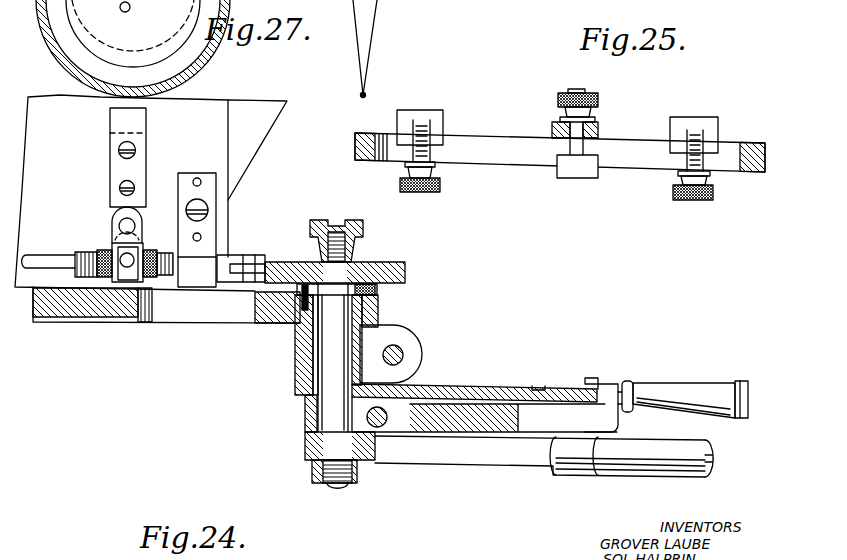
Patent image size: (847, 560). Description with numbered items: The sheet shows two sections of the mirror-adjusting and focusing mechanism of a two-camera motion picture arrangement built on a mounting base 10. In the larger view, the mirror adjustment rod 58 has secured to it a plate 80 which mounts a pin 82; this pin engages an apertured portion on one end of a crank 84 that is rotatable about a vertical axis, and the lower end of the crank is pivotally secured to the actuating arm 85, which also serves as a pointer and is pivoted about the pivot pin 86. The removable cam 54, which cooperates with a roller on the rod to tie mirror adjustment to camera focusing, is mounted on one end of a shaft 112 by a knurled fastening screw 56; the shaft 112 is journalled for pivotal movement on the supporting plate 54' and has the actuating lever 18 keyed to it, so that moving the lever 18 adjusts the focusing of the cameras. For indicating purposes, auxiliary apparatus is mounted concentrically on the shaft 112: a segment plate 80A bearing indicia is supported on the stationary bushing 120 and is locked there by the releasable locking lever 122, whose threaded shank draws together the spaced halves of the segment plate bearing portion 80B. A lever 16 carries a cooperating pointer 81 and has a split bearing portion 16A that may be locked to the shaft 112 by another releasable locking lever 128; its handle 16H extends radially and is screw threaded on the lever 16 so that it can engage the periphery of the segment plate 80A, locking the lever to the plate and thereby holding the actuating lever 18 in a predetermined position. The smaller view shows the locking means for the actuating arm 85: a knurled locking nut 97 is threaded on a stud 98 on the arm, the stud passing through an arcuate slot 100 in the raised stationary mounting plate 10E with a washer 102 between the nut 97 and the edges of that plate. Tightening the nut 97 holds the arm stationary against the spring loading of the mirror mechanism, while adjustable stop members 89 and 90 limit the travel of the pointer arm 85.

In FIG. 24, the mounting base 10 is at (208, 108).
In FIG. 24, the actuating arm 85 is at (115, 122).
In FIG. 25, the actuating arm 85 is at (557, 125).
In FIG. 24, the pivot pin 86 is at (120, 188).
In FIG. 24, the crank 84 is at (110, 240).
In FIG. 24, the pin 82 is at (125, 268).
In FIG. 24, the plate 80 is at (130, 280).
In FIG. 24, the mirror adjustment rod 58 is at (228, 257).
In FIG. 24, the cam 54 is at (354, 272).
In FIG. 24, the knurled fastening screw 56 is at (355, 230).
In FIG. 24, the supporting plate 54' is at (386, 340).
In FIG. 24, the stationary bushing 120 is at (295, 340).
In FIG. 24, the segment plate bearing portion 80B is at (300, 357).
In FIG. 24, the shaft 112 is at (327, 372).
In FIG. 24, the split bearing portion 16A is at (308, 412).
In FIG. 24, the releasable locking lever 122 is at (405, 353).
In FIG. 24, the releasable locking lever 128 is at (382, 420).
In FIG. 24, the segment plate 80A is at (468, 393).
In FIG. 24, the pointer 81 is at (590, 378).
In FIG. 24, the lever 16 is at (683, 383).
In FIG. 24, the handle 16H is at (720, 405).
In FIG. 24, the actuating lever 18 is at (635, 455).
In FIG. 25, the raised stationary mounting plate 10E is at (755, 143).
In FIG. 25, the arcuate slot 100 is at (737, 163).
In FIG. 25, the adjustable stop member 89 is at (438, 118).
In FIG. 25, the adjustable stop member 90 is at (712, 127).
In FIG. 25, the knurled locking nut 97 is at (565, 95).
In FIG. 25, the washer 102 is at (557, 133).
In FIG. 25, the stud 98 is at (583, 148).